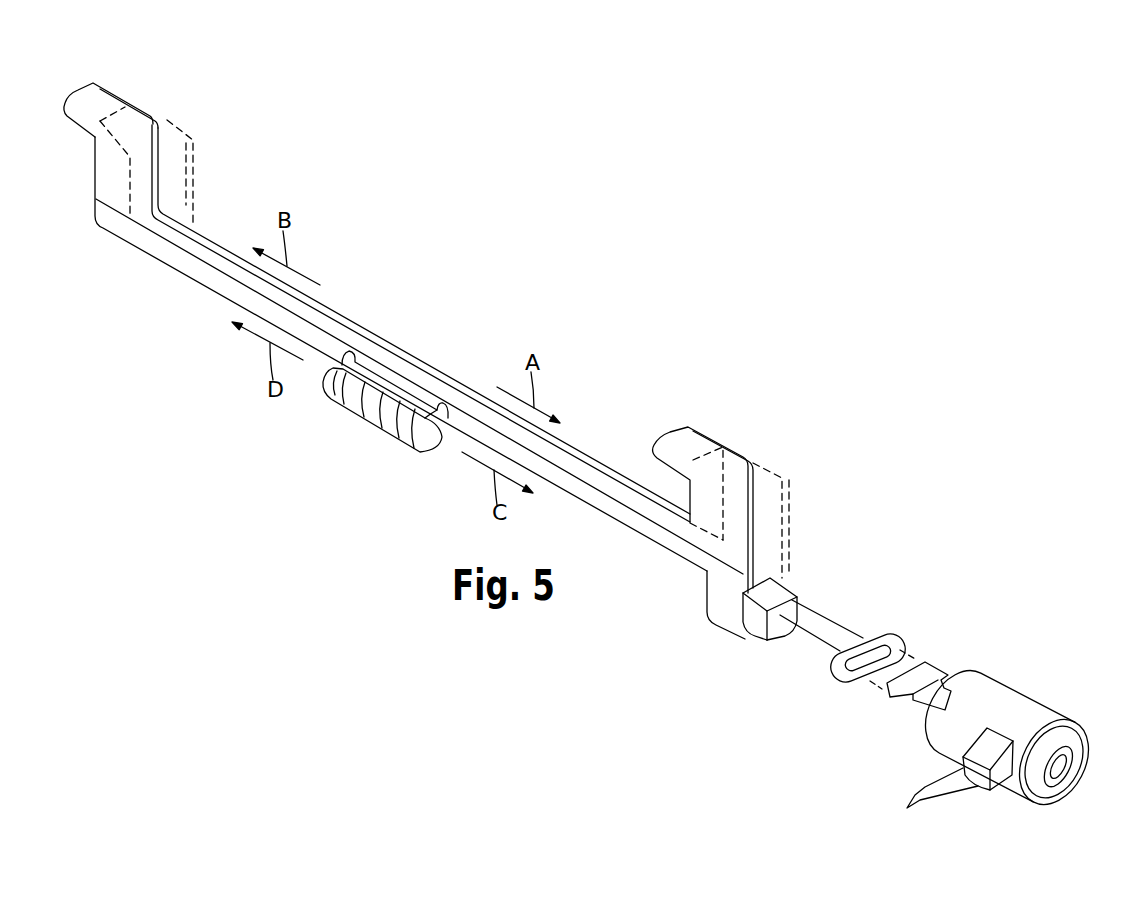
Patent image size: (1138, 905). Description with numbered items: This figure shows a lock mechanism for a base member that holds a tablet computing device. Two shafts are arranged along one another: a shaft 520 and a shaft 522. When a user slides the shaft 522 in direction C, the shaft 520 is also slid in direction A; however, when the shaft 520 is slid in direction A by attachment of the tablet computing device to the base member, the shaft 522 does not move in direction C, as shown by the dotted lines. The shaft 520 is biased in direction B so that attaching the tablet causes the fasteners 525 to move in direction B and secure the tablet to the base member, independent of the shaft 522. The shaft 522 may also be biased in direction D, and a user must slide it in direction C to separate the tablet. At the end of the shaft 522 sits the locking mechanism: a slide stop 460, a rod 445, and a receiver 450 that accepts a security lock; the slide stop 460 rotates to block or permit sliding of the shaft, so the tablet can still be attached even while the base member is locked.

The shaft 520 is at (430, 365).
The shaft 522 is at (187, 260).
The fasteners 525 is at (73, 97).
The slide stop 460 is at (763, 632).
The rod 445 is at (832, 622).
The receiver 450 is at (837, 682).